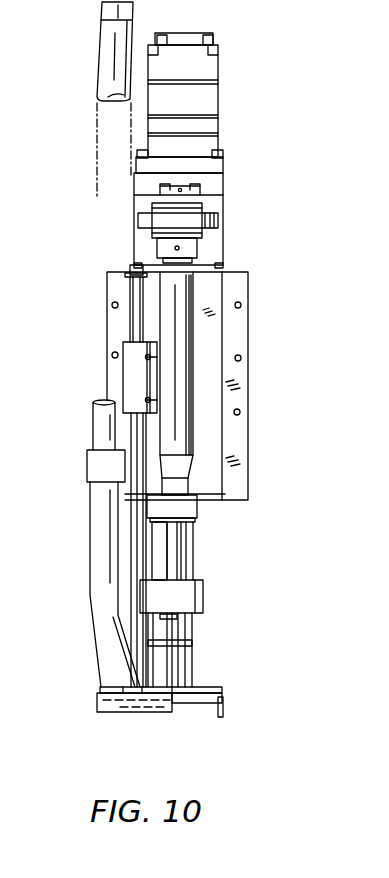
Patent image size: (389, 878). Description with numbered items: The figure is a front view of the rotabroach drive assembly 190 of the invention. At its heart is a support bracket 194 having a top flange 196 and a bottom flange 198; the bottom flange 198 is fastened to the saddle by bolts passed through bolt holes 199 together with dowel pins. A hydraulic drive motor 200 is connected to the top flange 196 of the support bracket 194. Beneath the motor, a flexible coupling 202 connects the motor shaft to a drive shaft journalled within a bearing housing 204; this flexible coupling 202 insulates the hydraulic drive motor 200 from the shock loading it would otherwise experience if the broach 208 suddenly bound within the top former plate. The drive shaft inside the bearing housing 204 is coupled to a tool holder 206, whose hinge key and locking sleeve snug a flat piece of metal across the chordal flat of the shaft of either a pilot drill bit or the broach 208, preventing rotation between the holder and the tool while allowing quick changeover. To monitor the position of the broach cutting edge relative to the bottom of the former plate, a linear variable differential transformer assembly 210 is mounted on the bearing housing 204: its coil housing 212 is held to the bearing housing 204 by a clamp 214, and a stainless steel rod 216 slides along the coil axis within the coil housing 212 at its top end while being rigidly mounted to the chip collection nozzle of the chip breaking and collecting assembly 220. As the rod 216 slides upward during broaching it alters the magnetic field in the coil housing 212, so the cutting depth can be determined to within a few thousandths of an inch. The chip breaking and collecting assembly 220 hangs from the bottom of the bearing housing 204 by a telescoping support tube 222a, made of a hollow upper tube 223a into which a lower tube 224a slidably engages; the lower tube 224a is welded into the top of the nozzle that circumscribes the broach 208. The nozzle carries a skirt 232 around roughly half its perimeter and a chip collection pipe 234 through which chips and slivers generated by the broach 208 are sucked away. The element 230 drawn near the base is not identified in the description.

The drive assembly 190 is at (235, 86).
The support bracket 194 is at (118, 172).
The top flange 196 is at (212, 165).
The bottom flange 198 is at (240, 323).
The bolt holes 199 is at (241, 360).
The hydraulic drive motor 200 is at (197, 112).
The flexible coupling 202 is at (188, 220).
The bearing housing 204 is at (183, 360).
The tool holder 206 is at (190, 553).
The broach 208 is at (185, 660).
The linear variable differential transformer assembly 210 is at (124, 360).
The coil housing 212 is at (133, 315).
The clamp 214 is at (132, 380).
The stainless steel rod 216 is at (135, 512).
The chip breaking and collecting assembly 220 is at (93, 691).
The telescoping support tube 222a is at (188, 538).
The hollow upper tube 223a is at (173, 568).
The lower tube 224a is at (170, 632).
The base slab 230 is at (140, 705).
The skirt 232 is at (110, 57).
The chip collection pipe 234 is at (120, 622).